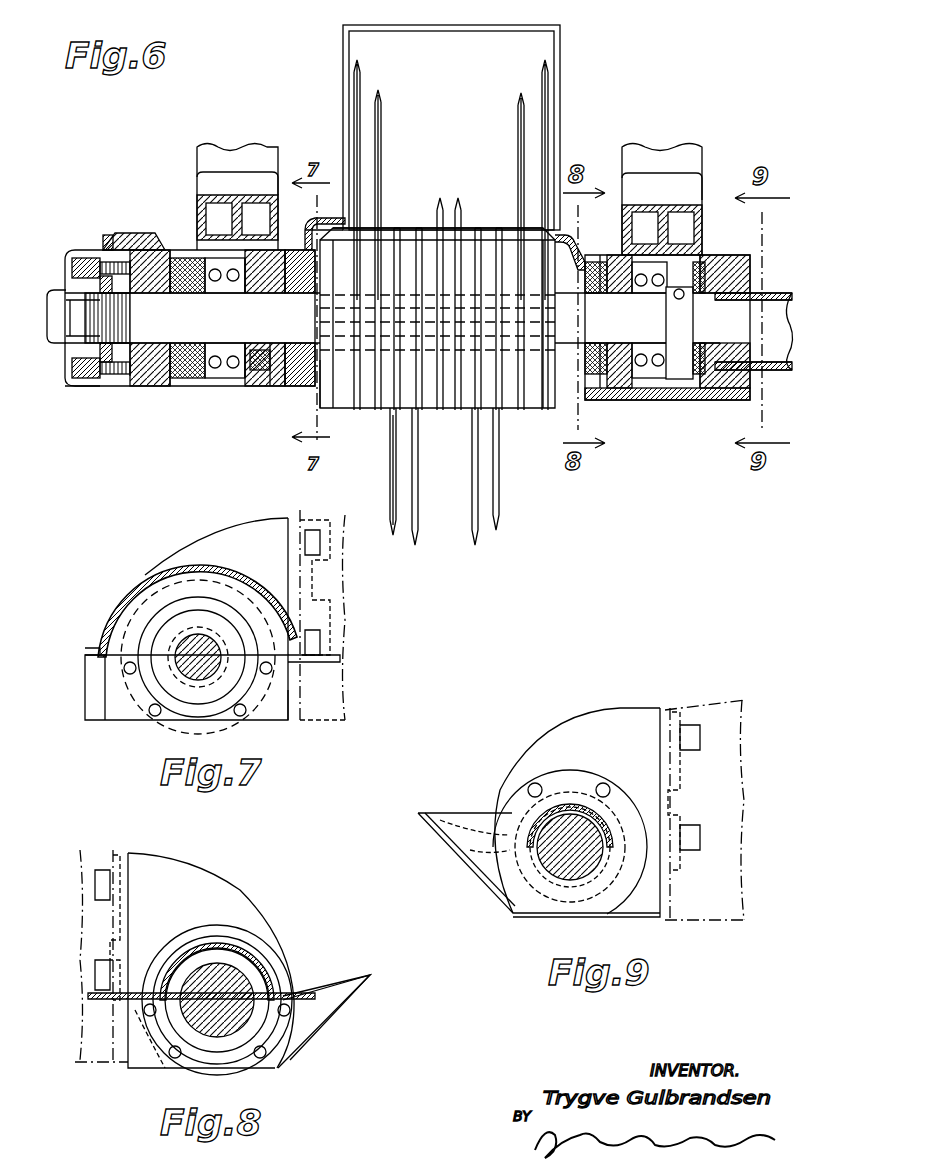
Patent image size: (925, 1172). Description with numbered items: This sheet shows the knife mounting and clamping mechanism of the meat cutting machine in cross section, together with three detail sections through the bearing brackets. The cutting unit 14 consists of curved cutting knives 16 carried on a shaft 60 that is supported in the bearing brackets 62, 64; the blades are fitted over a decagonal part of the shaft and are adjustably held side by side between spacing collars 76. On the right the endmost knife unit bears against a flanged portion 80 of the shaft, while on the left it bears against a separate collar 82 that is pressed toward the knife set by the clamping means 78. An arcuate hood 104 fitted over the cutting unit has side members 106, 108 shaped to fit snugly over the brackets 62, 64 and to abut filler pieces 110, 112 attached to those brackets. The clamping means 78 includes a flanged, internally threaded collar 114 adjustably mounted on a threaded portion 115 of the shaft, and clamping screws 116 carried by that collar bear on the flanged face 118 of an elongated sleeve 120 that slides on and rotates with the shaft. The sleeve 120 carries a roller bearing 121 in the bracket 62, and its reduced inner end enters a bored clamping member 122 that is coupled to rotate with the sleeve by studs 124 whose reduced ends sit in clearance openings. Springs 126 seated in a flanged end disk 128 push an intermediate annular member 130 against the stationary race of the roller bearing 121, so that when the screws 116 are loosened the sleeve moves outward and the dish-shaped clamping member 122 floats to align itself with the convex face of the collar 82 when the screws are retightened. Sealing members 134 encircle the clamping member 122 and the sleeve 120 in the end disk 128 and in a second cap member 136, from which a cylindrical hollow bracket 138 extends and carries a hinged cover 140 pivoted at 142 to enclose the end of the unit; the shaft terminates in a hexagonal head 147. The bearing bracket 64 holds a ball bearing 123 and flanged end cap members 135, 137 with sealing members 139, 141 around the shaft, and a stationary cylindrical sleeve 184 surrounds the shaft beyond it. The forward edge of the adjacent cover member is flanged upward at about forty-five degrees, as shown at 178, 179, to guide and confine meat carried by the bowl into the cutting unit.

In FIG. 6, the cutting unit 14 is at (459, 94).
In FIG. 6, the cutting knives 16 is at (381, 113).
In FIG. 6, the shaft 60 is at (240, 335).
In FIG. 7, the shaft 60 is at (175, 648).
In FIG. 8, the shaft 60 is at (235, 965).
In FIG. 9, the shaft 60 is at (550, 820).
In FIG. 6, the bearing bracket 62 is at (181, 184).
In FIG. 7, the bearing bracket 62 is at (240, 530).
In FIG. 6, the bearing bracket 64 is at (723, 183).
In FIG. 8, the bearing bracket 64 is at (215, 878).
In FIG. 9, the bearing bracket 64 is at (618, 712).
In FIG. 6, the spacing collars 76 is at (415, 228).
In FIG. 6, the clamping means 78 is at (68, 206).
In FIG. 6, the flanged portion 80 is at (553, 395).
In FIG. 6, the collar 82 is at (322, 380).
In FIG. 6, the arcuate hood 104 is at (561, 64).
In FIG. 6, the side member 106 is at (306, 240).
In FIG. 7, the side member 106 is at (132, 590).
In FIG. 6, the side member 108 is at (570, 240).
In FIG. 8, the side member 108 is at (280, 965).
In FIG. 6, the filler piece 110 is at (300, 386).
In FIG. 7, the filler piece 110 is at (115, 712).
In FIG. 6, the filler piece 112 is at (603, 400).
In FIG. 8, the filler piece 112 is at (152, 1055).
In FIG. 6, the collar 114 is at (105, 362).
In FIG. 6, the threaded portion 115 is at (72, 340).
In FIG. 6, the clamping screws 116 is at (105, 262).
In FIG. 6, the flanged face 118 is at (128, 375).
In FIG. 6, the sleeve 120 is at (128, 320).
In FIG. 6, the roller bearing 121 is at (225, 284).
In FIG. 6, the clamping member 122 is at (272, 386).
In FIG. 6, the ball bearing 123 is at (645, 290).
In FIG. 6, the studs 124 is at (275, 345).
In FIG. 6, the springs 126 is at (262, 380).
In FIG. 6, the flanged end disk 128 is at (288, 386).
In FIG. 6, the intermediate annular member 130 is at (237, 208).
In FIG. 6, the sealing member 134 is at (180, 378).
In FIG. 6, the flanged end cap member 135 is at (615, 400).
In FIG. 6, the cap member 136 is at (195, 378).
In FIG. 6, the flanged end cap member 137 is at (708, 400).
In FIG. 6, the cylindrical hollow bracket 138 is at (130, 235).
In FIG. 6, the sealing member 139 is at (612, 375).
In FIG. 6, the hinged cover 140 is at (68, 300).
In FIG. 6, the sealing member 141 is at (700, 370).
In FIG. 6, the pivot 142 is at (108, 235).
In FIG. 6, the hexagonal head 147 is at (60, 322).
In FIG. 8, the flanged edge 178 is at (320, 1025).
In FIG. 9, the flanged edge 179 is at (480, 880).
In FIG. 6, the stationary cylindrical sleeve 184 is at (762, 295).
In FIG. 9, the stationary cylindrical sleeve 184 is at (568, 800).